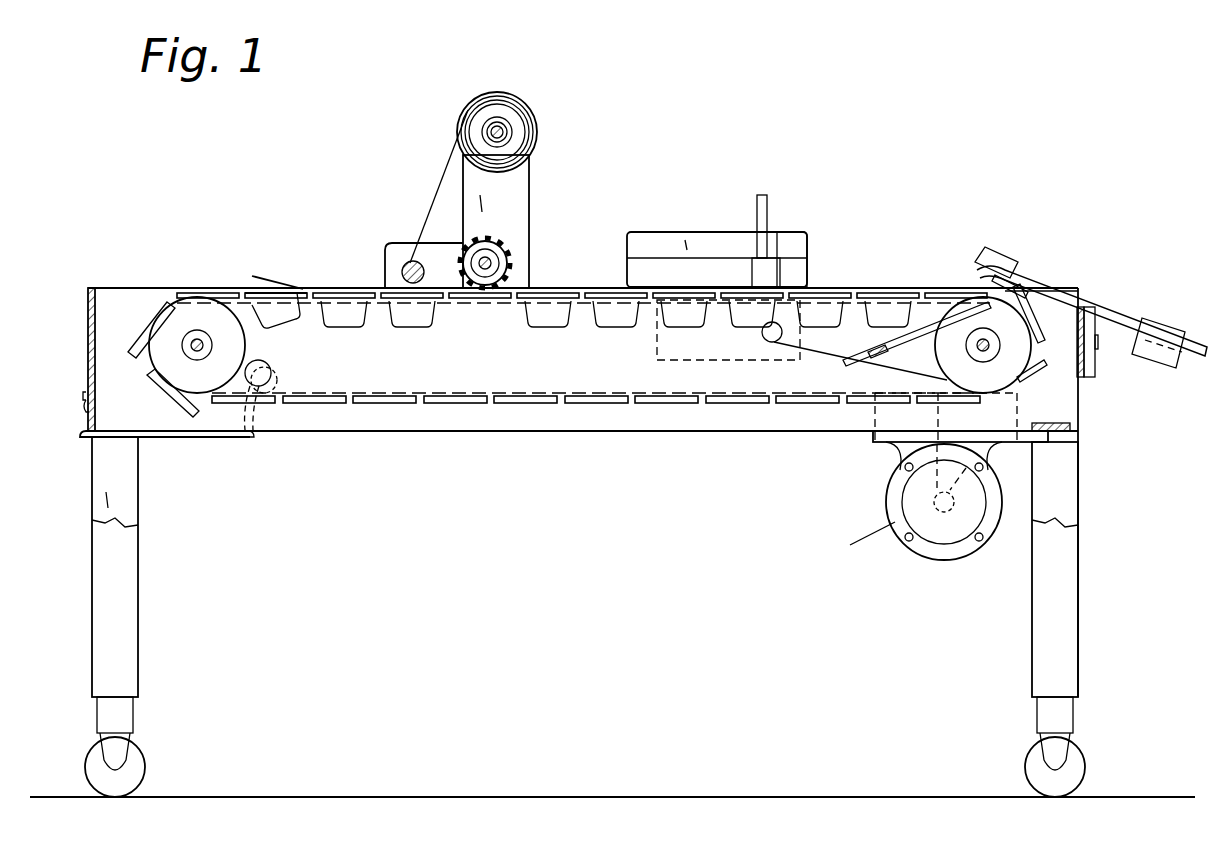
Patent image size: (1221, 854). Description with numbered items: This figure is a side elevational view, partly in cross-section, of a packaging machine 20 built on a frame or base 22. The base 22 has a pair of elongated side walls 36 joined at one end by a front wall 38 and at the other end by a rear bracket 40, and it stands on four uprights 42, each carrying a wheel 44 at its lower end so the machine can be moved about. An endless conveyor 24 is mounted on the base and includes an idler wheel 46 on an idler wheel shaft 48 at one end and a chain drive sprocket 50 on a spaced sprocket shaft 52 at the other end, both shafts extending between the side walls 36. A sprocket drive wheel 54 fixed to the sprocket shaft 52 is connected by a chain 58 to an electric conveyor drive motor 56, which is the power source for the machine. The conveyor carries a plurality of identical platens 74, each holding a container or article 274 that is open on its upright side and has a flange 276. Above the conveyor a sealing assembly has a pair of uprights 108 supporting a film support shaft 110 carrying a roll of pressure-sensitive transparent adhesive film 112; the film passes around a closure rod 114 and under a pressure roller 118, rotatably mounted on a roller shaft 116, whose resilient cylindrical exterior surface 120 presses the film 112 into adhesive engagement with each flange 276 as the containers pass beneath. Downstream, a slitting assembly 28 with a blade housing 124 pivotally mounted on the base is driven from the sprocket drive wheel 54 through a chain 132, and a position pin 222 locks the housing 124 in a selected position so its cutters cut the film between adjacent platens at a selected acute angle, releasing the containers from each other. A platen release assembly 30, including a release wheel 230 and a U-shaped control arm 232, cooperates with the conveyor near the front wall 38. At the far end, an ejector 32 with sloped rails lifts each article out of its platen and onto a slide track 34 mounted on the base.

The packaging machine 20 is at (575, 432).
The frame or base 22 is at (348, 433).
The endless conveyor 24 is at (330, 292).
The slitting assembly 28 is at (808, 235).
The platen release assembly 30 is at (230, 438).
The ejector 32 is at (915, 335).
The slide track 34 is at (1115, 310).
The side walls 36 is at (635, 420).
The front wall 38 is at (88, 332).
The rear bracket 40 is at (1060, 424).
The uprights 42 is at (138, 608).
The wheel 44 is at (145, 765).
The idler wheel 46 is at (178, 300).
The idler wheel shaft 48 is at (203, 345).
The chain drive sprocket 50 is at (1020, 368).
The sprocket shaft 52 is at (985, 340).
The sprocket drive wheel 54 is at (1027, 355).
The electric conveyor drive motor 56 is at (902, 523).
The chain 58 is at (880, 440).
The platens 74 is at (460, 405).
The uprights 108 is at (530, 188).
The film support shaft 110 is at (503, 132).
The roll of pressure-sensitive, transparent, adhesive film 112 is at (505, 95).
The closure rod 114 is at (420, 262).
The roller shaft 116 is at (491, 263).
The pressure roller 118 is at (508, 258).
The resilient cylindrical exterior surface 120 is at (500, 244).
The blade housing 124 is at (657, 232).
The chain 132 is at (850, 338).
The position pin 222 is at (766, 196).
The release wheel 230 is at (270, 370).
The U-shaped control arm 232 is at (178, 438).
The container or article 274 is at (272, 292).
The flange 276 is at (252, 276).